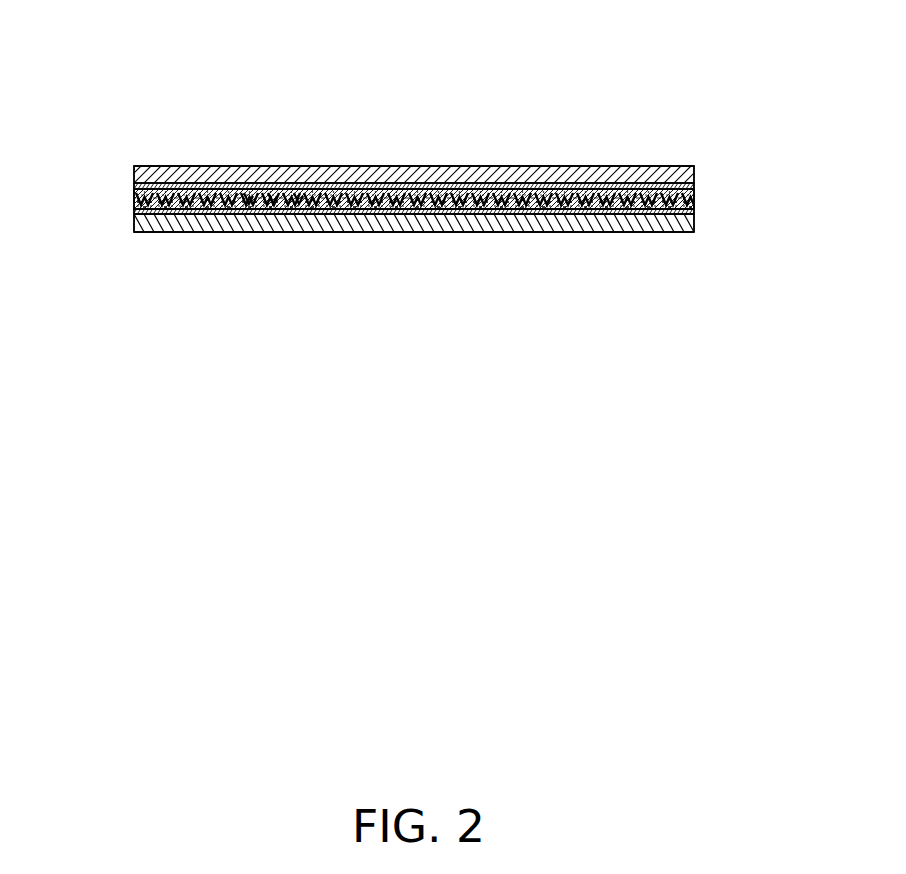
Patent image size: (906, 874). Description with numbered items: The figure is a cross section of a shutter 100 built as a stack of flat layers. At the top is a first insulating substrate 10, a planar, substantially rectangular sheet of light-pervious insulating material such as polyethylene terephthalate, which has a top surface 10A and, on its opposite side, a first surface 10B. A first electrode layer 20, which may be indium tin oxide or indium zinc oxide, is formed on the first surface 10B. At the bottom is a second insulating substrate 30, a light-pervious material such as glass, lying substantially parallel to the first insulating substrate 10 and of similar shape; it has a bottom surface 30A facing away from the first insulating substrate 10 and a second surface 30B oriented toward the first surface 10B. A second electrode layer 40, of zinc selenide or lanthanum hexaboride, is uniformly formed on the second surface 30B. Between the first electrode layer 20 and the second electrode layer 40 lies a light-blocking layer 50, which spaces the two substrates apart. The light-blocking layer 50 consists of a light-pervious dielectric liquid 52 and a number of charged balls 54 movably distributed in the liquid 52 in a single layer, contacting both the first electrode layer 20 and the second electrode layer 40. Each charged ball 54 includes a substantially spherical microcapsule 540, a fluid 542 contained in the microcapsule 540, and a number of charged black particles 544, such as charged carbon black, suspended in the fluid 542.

The shutter 100 is at (440, 47).
The first insulating substrate 10 is at (757, 130).
The top surface 10A is at (658, 166).
The first surface 10B is at (694, 192).
The first electrode layer 20 is at (468, 183).
The light-blocking layer 50 is at (414, 202).
The dielectric liquid 52 is at (260, 207).
The charged balls 54 is at (295, 203).
The microcapsule 540 is at (303, 184).
The fluid 542 is at (250, 189).
The charged black particles 544 is at (275, 191).
The second electrode layer 40 is at (198, 214).
The second insulating substrate 30 is at (74, 192).
The bottom surface 30A is at (175, 230).
The second surface 30B is at (134, 201).